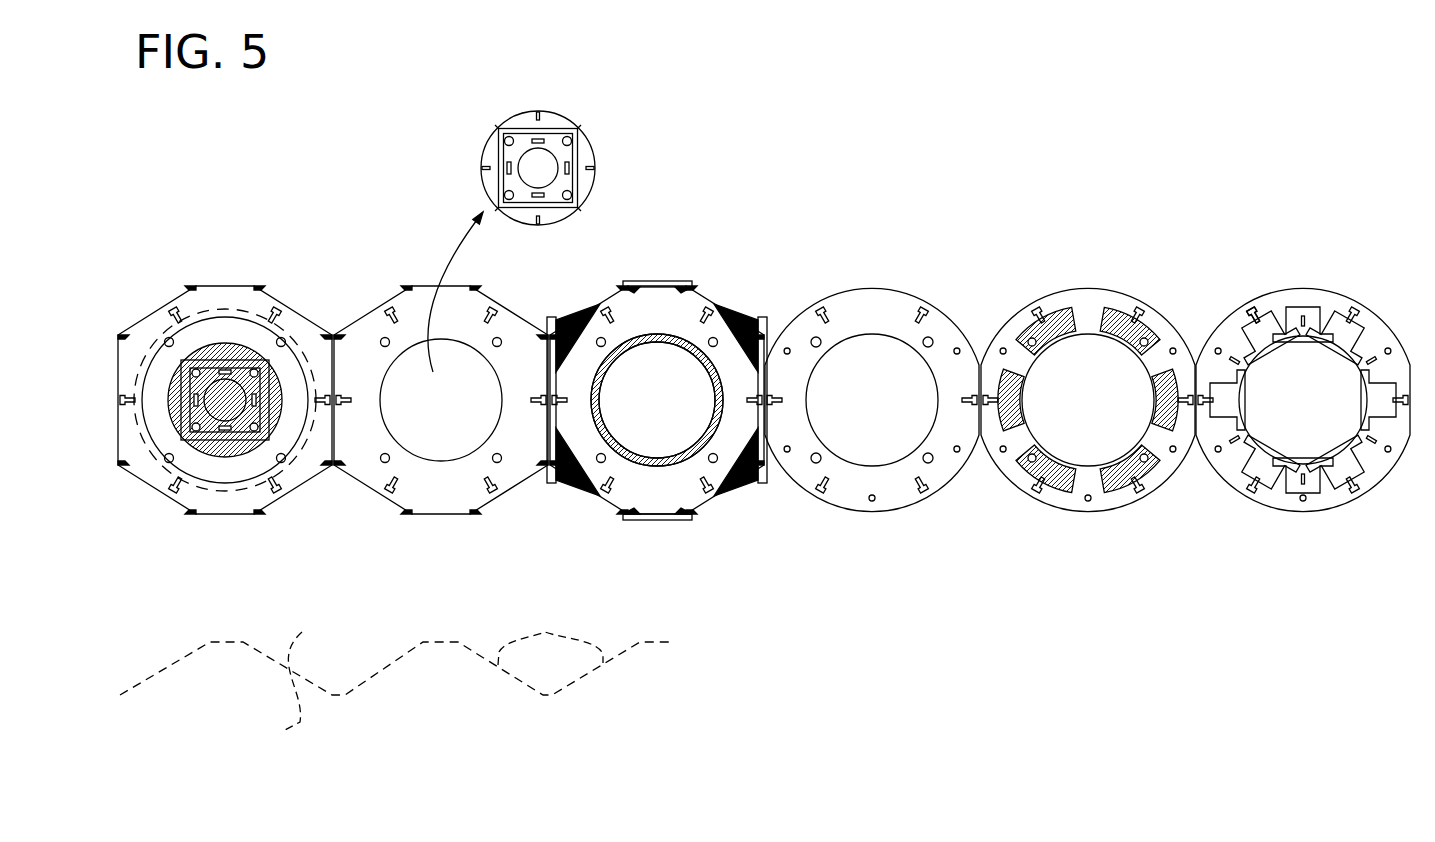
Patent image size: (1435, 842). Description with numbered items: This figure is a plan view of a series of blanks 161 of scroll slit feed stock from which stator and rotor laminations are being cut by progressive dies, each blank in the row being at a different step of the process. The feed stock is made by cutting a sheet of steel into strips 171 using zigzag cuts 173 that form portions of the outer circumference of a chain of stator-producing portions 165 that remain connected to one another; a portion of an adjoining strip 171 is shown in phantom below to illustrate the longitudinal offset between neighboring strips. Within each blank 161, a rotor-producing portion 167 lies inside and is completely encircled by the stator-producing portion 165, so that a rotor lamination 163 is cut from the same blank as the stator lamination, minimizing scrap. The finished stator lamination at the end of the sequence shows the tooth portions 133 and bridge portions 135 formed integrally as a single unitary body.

The tooth portions 133 is at (1303, 278).
The bridge portions 135 is at (1222, 271).
The flat blank 161 is at (298, 308).
The rotor lamination 163 is at (485, 182).
The stator-producing portion 165 is at (222, 317).
The rotor-producing portion 167 is at (240, 345).
The strips 171 is at (148, 332).
The zigzag cuts 173 is at (543, 632).